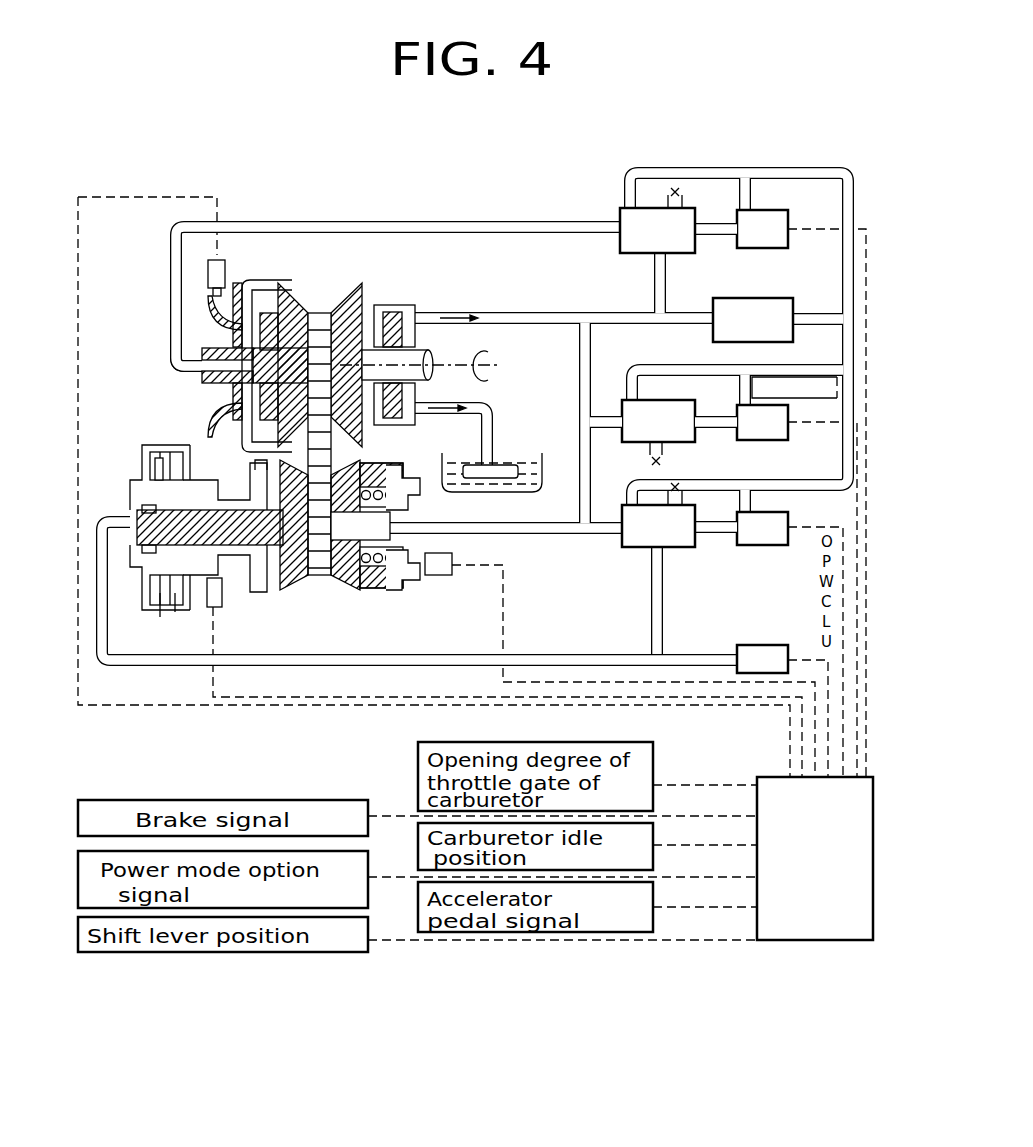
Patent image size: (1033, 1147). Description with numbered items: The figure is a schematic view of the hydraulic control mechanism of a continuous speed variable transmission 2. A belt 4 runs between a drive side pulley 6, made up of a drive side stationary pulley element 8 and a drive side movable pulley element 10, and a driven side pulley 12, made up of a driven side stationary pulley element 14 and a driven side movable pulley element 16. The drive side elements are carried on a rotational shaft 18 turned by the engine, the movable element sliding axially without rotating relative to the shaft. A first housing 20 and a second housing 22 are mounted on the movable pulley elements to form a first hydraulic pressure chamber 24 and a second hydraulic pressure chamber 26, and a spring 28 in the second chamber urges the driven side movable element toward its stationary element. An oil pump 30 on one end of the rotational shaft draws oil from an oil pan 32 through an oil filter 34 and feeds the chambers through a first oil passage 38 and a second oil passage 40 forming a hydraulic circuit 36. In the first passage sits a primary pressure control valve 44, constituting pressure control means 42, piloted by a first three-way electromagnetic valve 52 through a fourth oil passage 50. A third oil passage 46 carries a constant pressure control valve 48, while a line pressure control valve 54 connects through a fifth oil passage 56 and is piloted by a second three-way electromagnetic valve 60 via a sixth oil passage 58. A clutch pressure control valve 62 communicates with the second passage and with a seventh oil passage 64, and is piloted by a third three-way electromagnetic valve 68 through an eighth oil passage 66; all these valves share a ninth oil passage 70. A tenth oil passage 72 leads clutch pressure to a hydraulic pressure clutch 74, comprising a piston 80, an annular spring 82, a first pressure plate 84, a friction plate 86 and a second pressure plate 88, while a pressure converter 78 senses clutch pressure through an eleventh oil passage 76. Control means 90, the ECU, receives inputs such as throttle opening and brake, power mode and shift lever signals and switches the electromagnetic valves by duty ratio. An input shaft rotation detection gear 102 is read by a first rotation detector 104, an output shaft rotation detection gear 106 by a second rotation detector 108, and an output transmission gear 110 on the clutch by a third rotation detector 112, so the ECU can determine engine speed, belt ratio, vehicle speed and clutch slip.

The continuous speed variable transmission 2 is at (804, 158).
The belt 4 is at (322, 312).
The drive side pulley 6 is at (182, 387).
The drive side stationary pulley element 8 is at (363, 284).
The drive side movable pulley element 10 is at (296, 300).
The driven side pulley 12 is at (406, 578).
The driven side stationary pulley element 14 is at (300, 582).
The driven side movable pulley element 16 is at (350, 585).
The rotational shaft 18 is at (440, 360).
The first housing 20 is at (257, 382).
The second housing 22 is at (387, 477).
The first hydraulic pressure chamber 24 is at (262, 413).
The second hydraulic pressure chamber 26 is at (380, 586).
The spring 28 is at (405, 586).
The oil pump 30 is at (395, 312).
The oil pan 32 is at (516, 494).
The oil filter 34 is at (504, 473).
The hydraulic circuit 36 is at (419, 215).
The first oil passage 38 is at (545, 222).
The second oil passage 40 is at (588, 310).
The pressure control means 42 is at (610, 180).
The primary pressure control valve 44 is at (657, 220).
The third oil passage 46 is at (666, 324).
The constant pressure control valve 48 is at (778, 320).
The fourth oil passage 50 is at (717, 238).
The first three-way electromagnetic valve 52 is at (762, 213).
The line pressure control valve 54 is at (732, 417).
The fifth oil passage 56 is at (612, 420).
The sixth oil passage 58 is at (715, 430).
The second three-way electromagnetic valve 60 is at (787, 407).
The clutch pressure control valve 62 is at (658, 515).
The seventh oil passage 64 is at (648, 583).
The eighth oil passage 66 is at (720, 535).
The third three-way electromagnetic valve 68 is at (762, 517).
The ninth oil passage 70 is at (854, 196).
The tenth oil passage 72 is at (422, 663).
The hydraulic pressure clutch 74 is at (122, 455).
The eleventh oil passage 76 is at (703, 650).
The pressure converter 78 is at (763, 643).
The piston 80 is at (155, 562).
The annular spring 82 is at (157, 595).
The first pressure plate 84 is at (160, 617).
The friction plate 86 is at (175, 612).
The second pressure plate 88 is at (180, 600).
The control means (ECU) 90 is at (853, 941).
The input shaft rotation detection gear 102 is at (213, 307).
The first rotation detector 104 is at (228, 260).
The output shaft rotation detection gear 106 is at (432, 490).
The second rotation detector 108 is at (452, 553).
The output transmission gear 110 is at (222, 480).
The third rotation detector 112 is at (222, 590).